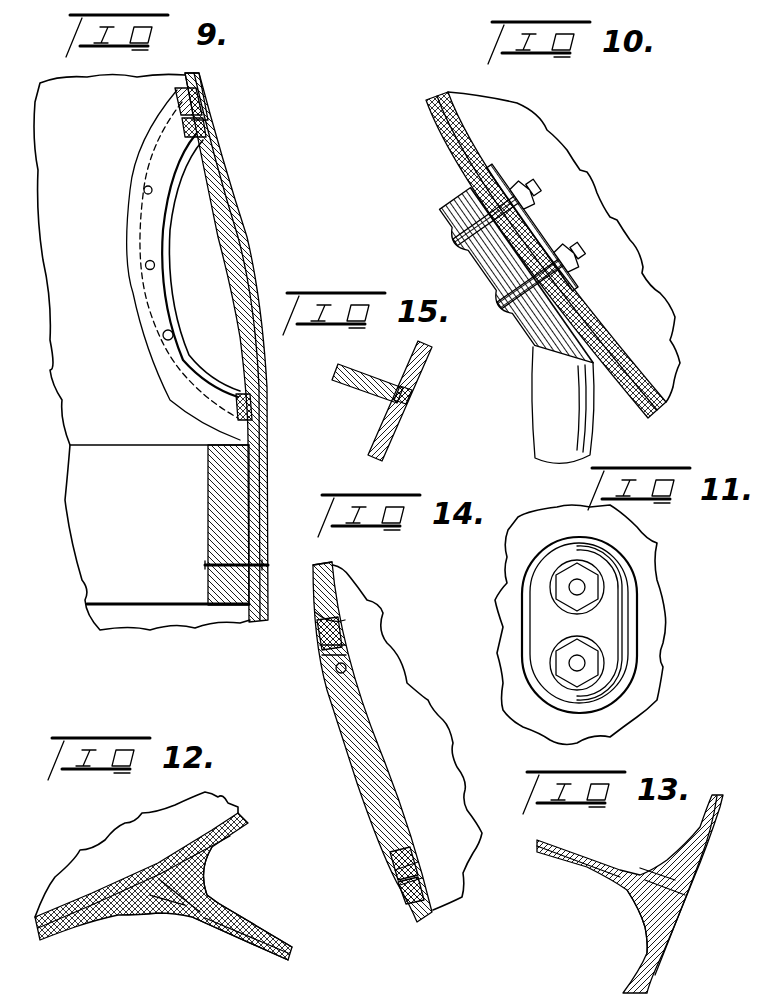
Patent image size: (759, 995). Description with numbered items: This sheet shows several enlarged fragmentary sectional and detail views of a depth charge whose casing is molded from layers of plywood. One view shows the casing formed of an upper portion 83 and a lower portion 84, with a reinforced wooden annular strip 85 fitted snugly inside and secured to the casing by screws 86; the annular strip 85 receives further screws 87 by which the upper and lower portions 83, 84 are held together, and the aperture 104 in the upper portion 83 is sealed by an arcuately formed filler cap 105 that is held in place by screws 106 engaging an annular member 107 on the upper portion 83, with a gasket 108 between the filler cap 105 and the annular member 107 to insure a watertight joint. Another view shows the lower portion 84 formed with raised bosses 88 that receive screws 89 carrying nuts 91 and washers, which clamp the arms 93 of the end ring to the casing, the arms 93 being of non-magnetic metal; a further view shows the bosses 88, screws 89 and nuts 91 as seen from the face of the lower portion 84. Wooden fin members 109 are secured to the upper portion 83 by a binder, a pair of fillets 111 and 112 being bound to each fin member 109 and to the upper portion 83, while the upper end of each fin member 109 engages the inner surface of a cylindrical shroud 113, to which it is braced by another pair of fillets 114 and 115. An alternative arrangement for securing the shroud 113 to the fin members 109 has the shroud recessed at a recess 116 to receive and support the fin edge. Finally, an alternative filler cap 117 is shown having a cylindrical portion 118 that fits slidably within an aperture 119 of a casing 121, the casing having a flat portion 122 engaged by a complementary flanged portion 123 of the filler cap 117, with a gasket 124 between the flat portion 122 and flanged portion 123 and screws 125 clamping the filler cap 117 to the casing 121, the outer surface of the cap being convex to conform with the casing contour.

In FIG. 9, the upper portion 83 is at (201, 86).
In FIG. 12, the upper portion 83 is at (62, 932).
In FIG. 9, the lower portion 84 is at (188, 630).
In FIG. 10, the lower portion 84 is at (432, 112).
In FIG. 11, the lower portion 84 is at (655, 607).
In FIG. 9, the annular strip 85 is at (160, 448).
In FIG. 9, the screws 86 is at (266, 572).
In FIG. 9, the screws 87 is at (210, 484).
In FIG. 10, the bosses 88 is at (570, 298).
In FIG. 11, the bosses 88 is at (552, 562).
In FIG. 10, the screws 89 is at (492, 280).
In FIG. 11, the screws 89 is at (577, 657).
In FIG. 10, the nuts 91 is at (540, 245).
In FIG. 11, the nuts 91 is at (580, 597).
In FIG. 10, the arms 93 is at (548, 392).
In FIG. 9, the aperture 104 is at (167, 230).
In FIG. 9, the filler cap 105 is at (232, 225).
In FIG. 9, the screws 106 is at (207, 124).
In FIG. 9, the annular member 107 is at (135, 150).
In FIG. 9, the gasket 108 is at (205, 106).
In FIG. 15, the fin members 109 is at (370, 375).
In FIG. 12, the fin members 109 is at (250, 925).
In FIG. 13, the fin members 109 is at (592, 880).
In FIG. 12, the fillet 111 is at (158, 912).
In FIG. 12, the fillet 112 is at (206, 878).
In FIG. 15, the shroud 113 is at (432, 378).
In FIG. 13, the shroud 113 is at (703, 828).
In FIG. 13, the fillet 114 is at (663, 866).
In FIG. 13, the fillet 115 is at (638, 922).
In FIG. 15, the recess 116 is at (415, 398).
In FIG. 14, the filler cap 117 is at (320, 724).
In FIG. 14, the cylindrical portion 118 is at (350, 670).
In FIG. 14, the aperture 119 is at (418, 856).
In FIG. 14, the casing 121 is at (332, 585).
In FIG. 14, the flat portion 122 is at (338, 626).
In FIG. 14, the flanged portion 123 is at (406, 898).
In FIG. 14, the gasket 124 is at (318, 633).
In FIG. 14, the screws 125 is at (322, 650).